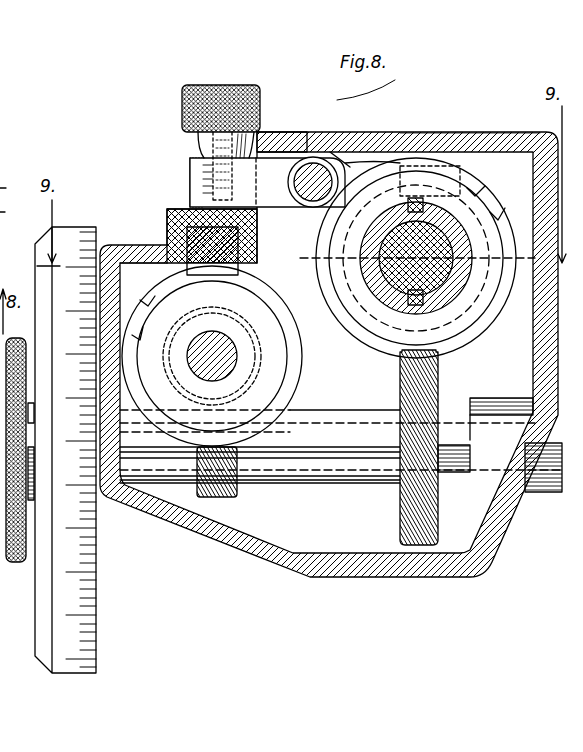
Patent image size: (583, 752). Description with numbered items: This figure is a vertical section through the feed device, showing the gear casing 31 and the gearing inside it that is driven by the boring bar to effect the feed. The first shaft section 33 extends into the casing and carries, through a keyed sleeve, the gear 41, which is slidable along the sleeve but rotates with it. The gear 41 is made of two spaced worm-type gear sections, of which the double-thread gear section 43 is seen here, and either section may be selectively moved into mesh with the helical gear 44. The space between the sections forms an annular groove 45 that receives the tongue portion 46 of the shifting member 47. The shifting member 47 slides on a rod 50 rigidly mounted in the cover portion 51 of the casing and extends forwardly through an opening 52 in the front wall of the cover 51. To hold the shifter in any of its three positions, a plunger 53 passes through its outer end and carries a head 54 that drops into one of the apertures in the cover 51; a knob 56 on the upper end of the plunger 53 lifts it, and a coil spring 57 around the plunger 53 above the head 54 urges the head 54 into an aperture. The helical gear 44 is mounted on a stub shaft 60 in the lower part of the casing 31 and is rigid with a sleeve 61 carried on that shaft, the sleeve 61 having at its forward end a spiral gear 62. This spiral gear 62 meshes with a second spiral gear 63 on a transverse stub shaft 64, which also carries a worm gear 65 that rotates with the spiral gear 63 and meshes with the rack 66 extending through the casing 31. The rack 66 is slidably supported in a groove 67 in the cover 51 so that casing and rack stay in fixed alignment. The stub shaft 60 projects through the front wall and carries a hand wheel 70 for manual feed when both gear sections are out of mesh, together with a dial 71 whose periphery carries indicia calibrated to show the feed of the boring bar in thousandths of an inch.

The casing 31 is at (372, 575).
The first shaft section 33 is at (428, 237).
The gear 41 is at (494, 220).
The gear section 43 is at (12, 216).
The helical gear 44 is at (440, 390).
The annular groove 45 is at (13, 192).
The tongue portion 46 is at (357, 165).
The shifting member 47 is at (320, 158).
The rod 50 is at (313, 180).
The cover portion 51 is at (455, 131).
The opening 52 is at (271, 145).
The plunger 53 is at (190, 161).
The head 54 is at (198, 198).
The knob 56 is at (224, 85).
The coil spring 57 is at (205, 178).
The stub shaft 60 is at (455, 462).
The sleeve 61 is at (336, 483).
The spiral gear 62 is at (225, 497).
The second spiral gear 63 is at (245, 323).
The stub shaft 64 is at (240, 350).
The worm gear 65 is at (305, 368).
The rack 66 is at (228, 241).
The groove 67 is at (185, 245).
The hand wheel 70 is at (18, 562).
The dial 71 is at (96, 614).